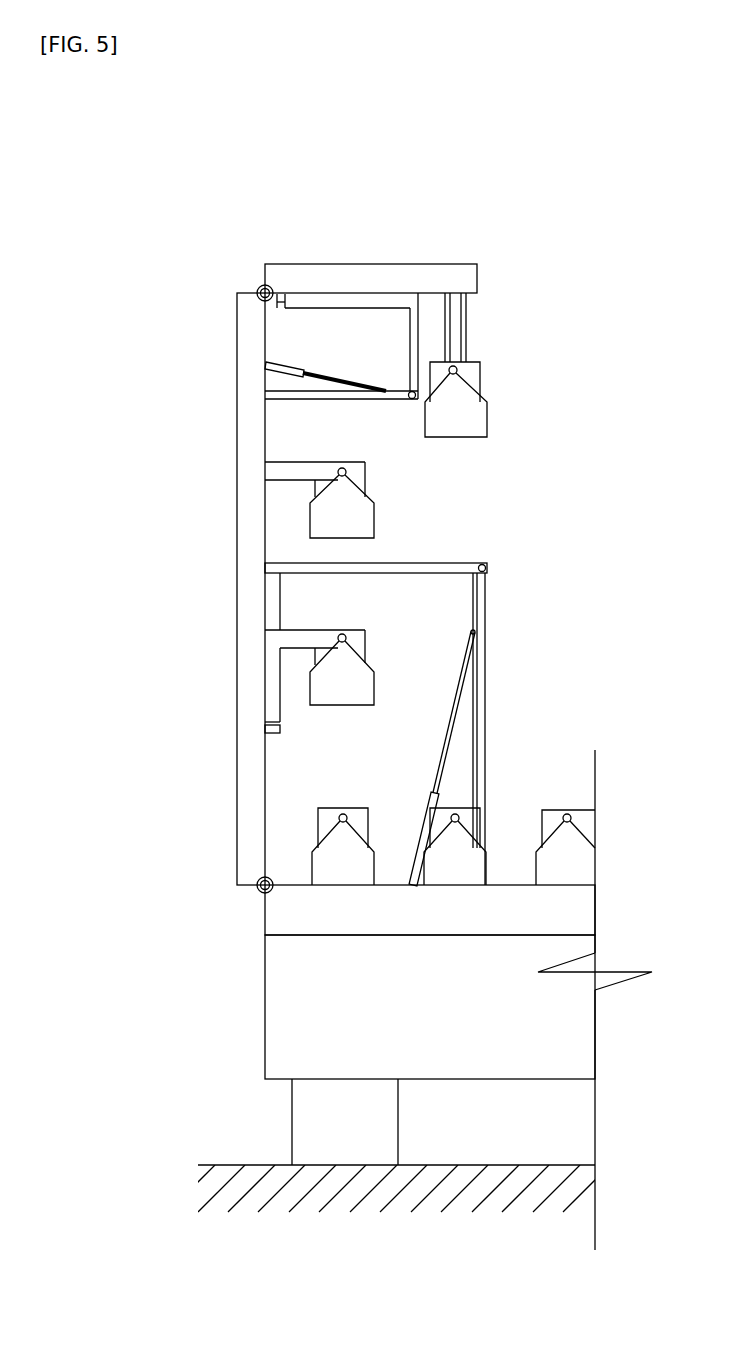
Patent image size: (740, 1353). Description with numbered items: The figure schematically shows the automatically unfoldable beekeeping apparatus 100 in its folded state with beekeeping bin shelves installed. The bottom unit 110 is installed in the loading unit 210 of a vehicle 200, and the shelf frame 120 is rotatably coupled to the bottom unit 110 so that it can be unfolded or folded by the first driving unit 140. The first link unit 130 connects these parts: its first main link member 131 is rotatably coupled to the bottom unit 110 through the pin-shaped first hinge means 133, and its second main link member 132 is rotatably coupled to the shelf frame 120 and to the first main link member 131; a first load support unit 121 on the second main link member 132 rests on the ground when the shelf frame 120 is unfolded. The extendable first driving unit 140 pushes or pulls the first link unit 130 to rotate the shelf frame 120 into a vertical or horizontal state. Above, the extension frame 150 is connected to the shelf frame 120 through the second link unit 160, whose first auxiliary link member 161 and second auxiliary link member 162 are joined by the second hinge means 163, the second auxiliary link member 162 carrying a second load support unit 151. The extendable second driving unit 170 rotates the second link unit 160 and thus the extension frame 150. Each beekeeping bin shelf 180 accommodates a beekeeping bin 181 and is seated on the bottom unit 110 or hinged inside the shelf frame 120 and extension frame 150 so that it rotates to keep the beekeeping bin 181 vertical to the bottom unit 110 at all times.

The automatically unfoldable beekeeping apparatus 100 is at (126, 122).
The bottom unit 110 is at (278, 913).
The shelf frame 120 is at (250, 786).
The first load support unit 121 is at (270, 700).
The first link unit 130 is at (455, 724).
The first main link member 131 is at (484, 703).
The second main link member 132 is at (410, 568).
The first hinge means 133 is at (483, 568).
The first driving unit 140 is at (443, 770).
The extension frame 150 is at (443, 264).
The second load support unit 151 is at (338, 297).
The second link unit 160 is at (511, 380).
The first auxiliary link member 161 is at (373, 400).
The second auxiliary link member 162 is at (412, 346).
The second hinge means 163 is at (430, 394).
The second driving unit 170 is at (293, 362).
The beekeeping bin shelf 180 is at (253, 439).
The beekeeping bin 181 is at (342, 468).
The vehicle 200 is at (352, 1000).
The loading unit 210 is at (265, 1005).